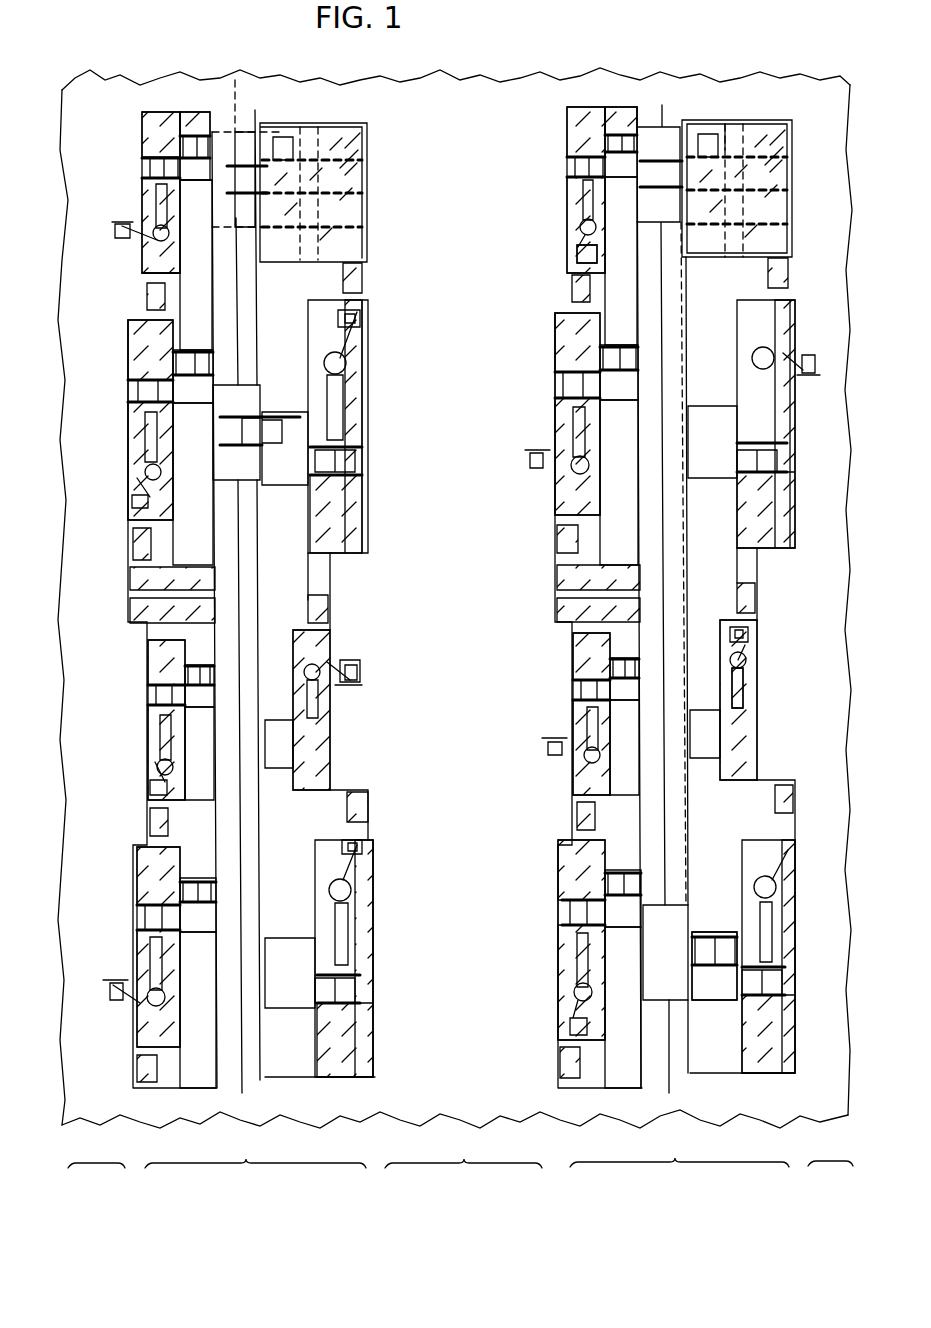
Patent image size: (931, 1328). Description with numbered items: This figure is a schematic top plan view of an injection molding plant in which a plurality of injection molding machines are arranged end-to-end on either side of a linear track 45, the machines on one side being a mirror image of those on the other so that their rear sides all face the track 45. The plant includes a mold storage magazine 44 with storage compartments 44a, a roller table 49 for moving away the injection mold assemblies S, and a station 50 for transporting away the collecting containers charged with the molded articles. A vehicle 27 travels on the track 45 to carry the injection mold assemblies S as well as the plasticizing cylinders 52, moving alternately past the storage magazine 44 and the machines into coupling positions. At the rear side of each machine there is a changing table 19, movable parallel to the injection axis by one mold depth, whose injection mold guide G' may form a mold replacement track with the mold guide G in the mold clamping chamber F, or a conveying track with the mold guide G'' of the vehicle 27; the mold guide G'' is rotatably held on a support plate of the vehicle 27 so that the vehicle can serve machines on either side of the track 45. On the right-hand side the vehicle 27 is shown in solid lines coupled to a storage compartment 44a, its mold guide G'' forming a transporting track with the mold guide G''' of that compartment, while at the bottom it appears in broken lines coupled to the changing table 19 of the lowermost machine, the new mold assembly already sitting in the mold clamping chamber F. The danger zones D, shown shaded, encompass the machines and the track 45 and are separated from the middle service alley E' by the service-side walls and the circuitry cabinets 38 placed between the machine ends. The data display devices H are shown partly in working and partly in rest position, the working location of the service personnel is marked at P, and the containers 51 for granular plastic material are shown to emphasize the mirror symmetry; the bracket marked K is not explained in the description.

The changing table 19 is at (200, 180).
The vehicle 27 is at (240, 236).
The circuitry cabinet 38 is at (148, 297).
The mold storage magazine 44 is at (372, 181).
The storage compartment 44a is at (340, 168).
The linear track 45 is at (244, 545).
The roller table 49 is at (135, 580).
The station 50 is at (135, 610).
The container for granular plastic material 51 is at (158, 240).
The plasticizing cylinder 52 is at (340, 398).
The injection mold assembly S is at (190, 135).
The mold clamping chamber F is at (152, 168).
The working location of the service personnel P is at (461, 599).
The data display device H is at (115, 228).
The mold guide G is at (346, 426).
The injection mold guide G' is at (285, 429).
The mold guide G'' is at (438, 281).
The mold guide G''' is at (720, 116).
The element K is at (265, 958).
The danger zone D is at (467, 1186).
The middle service alley E' is at (460, 1187).